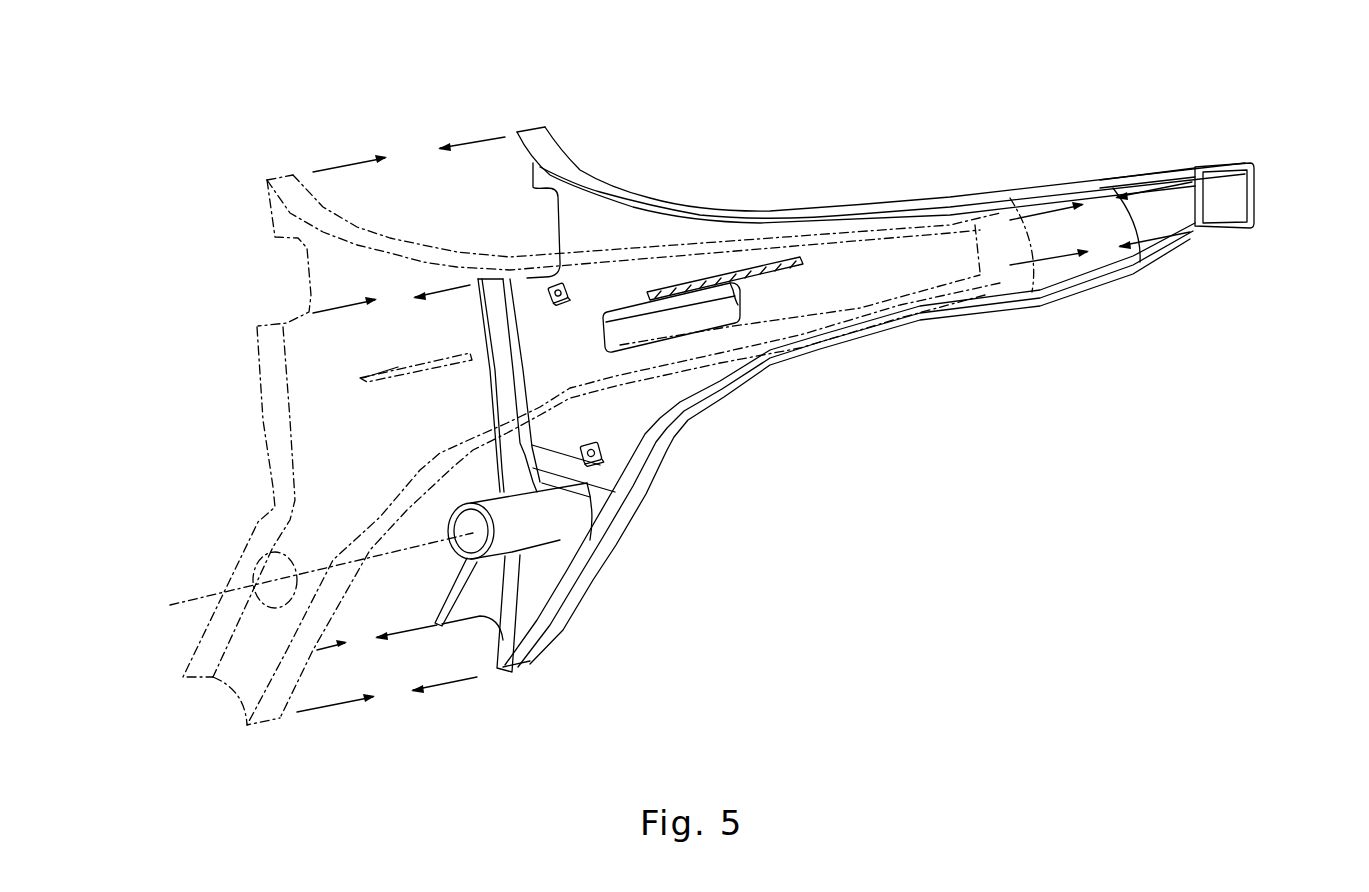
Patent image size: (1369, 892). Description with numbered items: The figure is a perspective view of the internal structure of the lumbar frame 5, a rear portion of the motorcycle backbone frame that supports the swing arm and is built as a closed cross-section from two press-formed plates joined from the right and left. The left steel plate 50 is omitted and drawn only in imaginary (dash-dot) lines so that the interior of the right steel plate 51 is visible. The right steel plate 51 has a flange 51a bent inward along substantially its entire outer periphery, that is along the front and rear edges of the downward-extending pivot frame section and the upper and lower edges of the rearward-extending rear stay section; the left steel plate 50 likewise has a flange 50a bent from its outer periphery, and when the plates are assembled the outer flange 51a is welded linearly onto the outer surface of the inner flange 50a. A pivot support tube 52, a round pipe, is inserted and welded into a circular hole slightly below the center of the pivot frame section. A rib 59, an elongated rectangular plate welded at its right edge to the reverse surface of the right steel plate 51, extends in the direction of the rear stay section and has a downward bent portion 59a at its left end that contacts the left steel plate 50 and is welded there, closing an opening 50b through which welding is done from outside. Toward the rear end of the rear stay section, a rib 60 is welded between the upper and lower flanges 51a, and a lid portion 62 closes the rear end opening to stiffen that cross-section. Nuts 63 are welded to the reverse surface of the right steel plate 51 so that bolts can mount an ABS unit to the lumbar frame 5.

The lumbar frame 5 is at (613, 108).
The left steel plate 50 is at (253, 324).
The flange 50a is at (398, 250).
The opening 50b is at (383, 367).
The right steel plate 51 is at (855, 199).
The flange 51a is at (698, 210).
The pivot support tube 52 is at (517, 540).
The rib 59 is at (765, 275).
The bent portion 59a is at (682, 327).
The rib 60 is at (1097, 217).
The lid portion 62 is at (1235, 190).
The nuts 63 is at (553, 290).